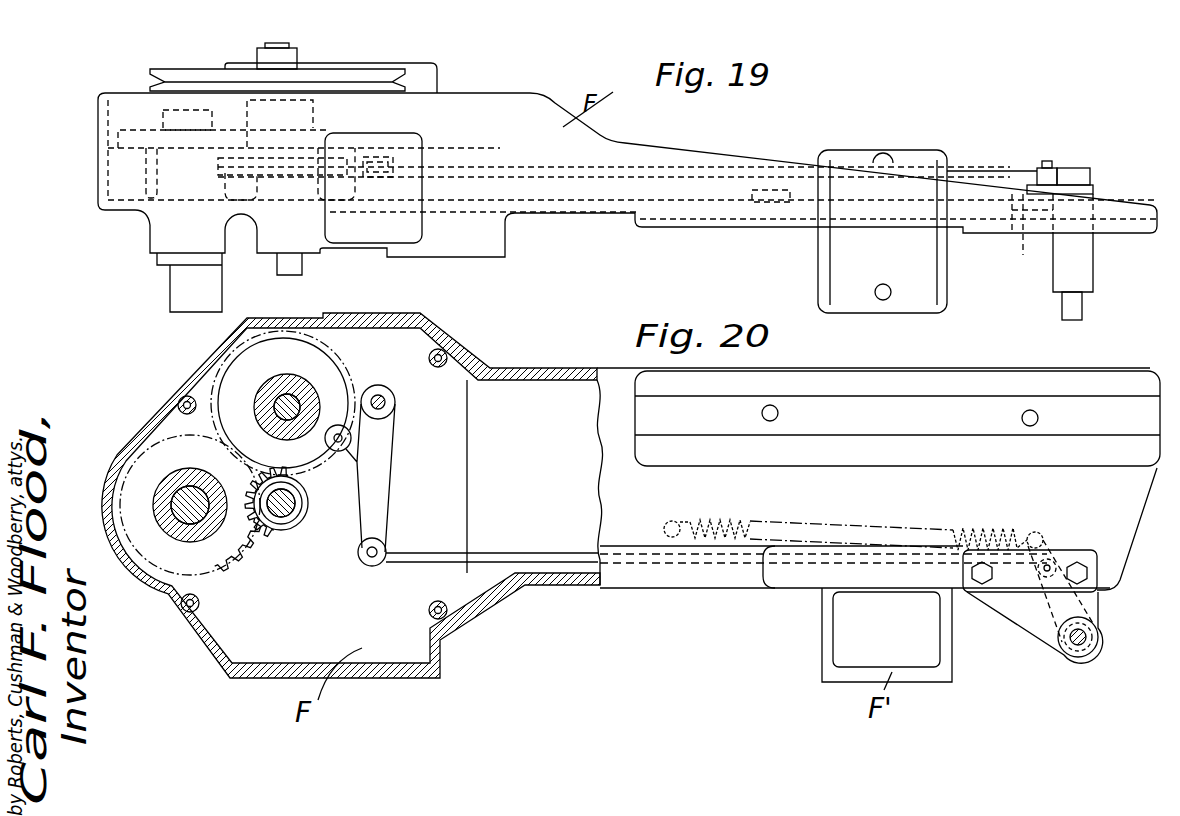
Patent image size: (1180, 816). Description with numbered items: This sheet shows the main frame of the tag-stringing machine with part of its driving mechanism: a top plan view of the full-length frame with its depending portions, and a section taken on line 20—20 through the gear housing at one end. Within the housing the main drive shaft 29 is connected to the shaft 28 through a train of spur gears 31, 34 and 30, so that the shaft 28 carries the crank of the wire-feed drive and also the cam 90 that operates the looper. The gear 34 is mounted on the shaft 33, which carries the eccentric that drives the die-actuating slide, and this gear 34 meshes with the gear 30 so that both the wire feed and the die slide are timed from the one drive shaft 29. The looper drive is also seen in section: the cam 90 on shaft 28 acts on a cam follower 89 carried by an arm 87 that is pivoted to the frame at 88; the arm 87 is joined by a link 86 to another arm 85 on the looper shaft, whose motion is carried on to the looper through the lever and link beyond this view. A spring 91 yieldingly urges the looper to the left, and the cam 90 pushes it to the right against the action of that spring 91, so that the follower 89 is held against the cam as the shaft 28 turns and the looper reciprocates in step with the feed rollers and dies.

In FIG. 19, the spur gears 20 is at (565, 165).
In FIG. 20, the shaft 28 is at (288, 393).
In FIG. 19, the main drive shaft 29 is at (294, 262).
In FIG. 20, the main drive shaft 29 is at (286, 528).
In FIG. 20, the spur gear 30 is at (302, 508).
In FIG. 20, the spur gear 31 is at (306, 484).
In FIG. 20, the shaft 33 is at (181, 478).
In FIG. 20, the gear 34 is at (241, 556).
In FIG. 20, the arm 85 is at (1072, 605).
In FIG. 20, the link 86 is at (526, 553).
In FIG. 20, the arm 87 is at (375, 466).
In FIG. 20, the pivot 88 is at (392, 386).
In FIG. 20, the cam follower 89 is at (350, 440).
In FIG. 20, the cam 90 is at (335, 382).
In FIG. 20, the spring 91 is at (741, 530).